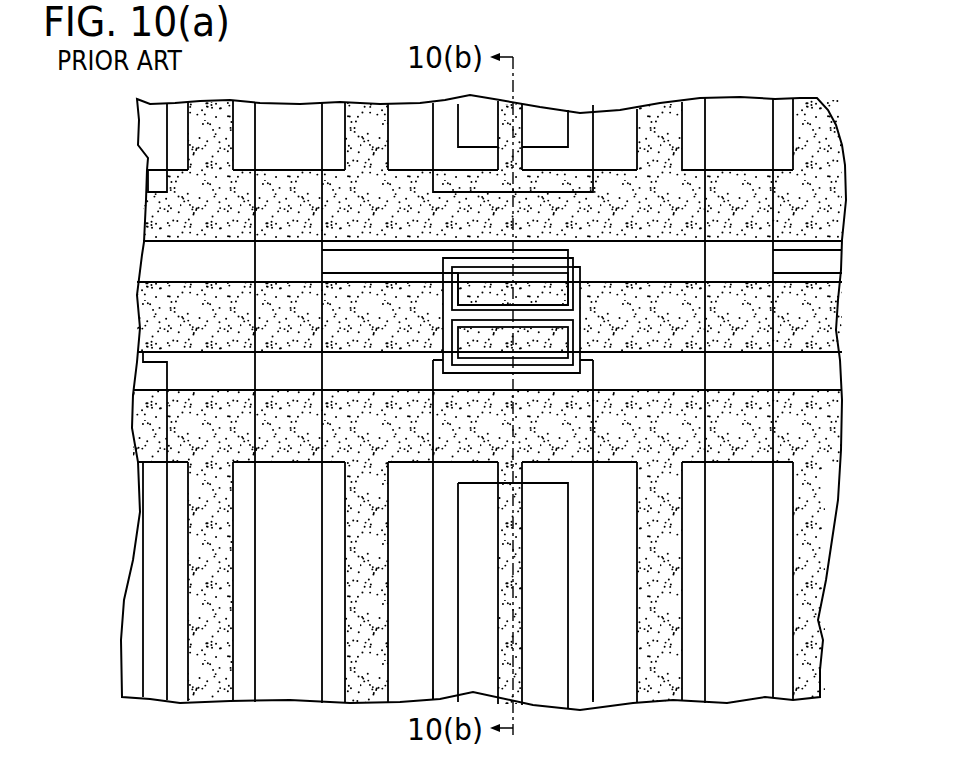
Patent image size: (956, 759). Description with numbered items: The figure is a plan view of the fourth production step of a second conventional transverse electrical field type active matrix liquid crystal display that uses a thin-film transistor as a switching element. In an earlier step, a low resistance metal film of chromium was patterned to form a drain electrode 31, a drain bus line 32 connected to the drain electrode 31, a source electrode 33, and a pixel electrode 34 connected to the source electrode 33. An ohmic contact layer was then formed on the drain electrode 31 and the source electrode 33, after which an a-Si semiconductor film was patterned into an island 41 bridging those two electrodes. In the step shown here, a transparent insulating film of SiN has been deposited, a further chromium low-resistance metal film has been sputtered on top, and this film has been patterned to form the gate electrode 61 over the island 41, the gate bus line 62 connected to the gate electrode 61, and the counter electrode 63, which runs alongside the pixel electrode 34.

The drain electrode 31 is at (437, 262).
The drain bus line 32 is at (277, 120).
The source electrode 33 is at (550, 367).
The pixel electrode 34 is at (580, 697).
The island 41 is at (512, 288).
The gate electrode 61 is at (583, 262).
The gate bus line 62 is at (822, 320).
The counter electrode 63 is at (353, 687).